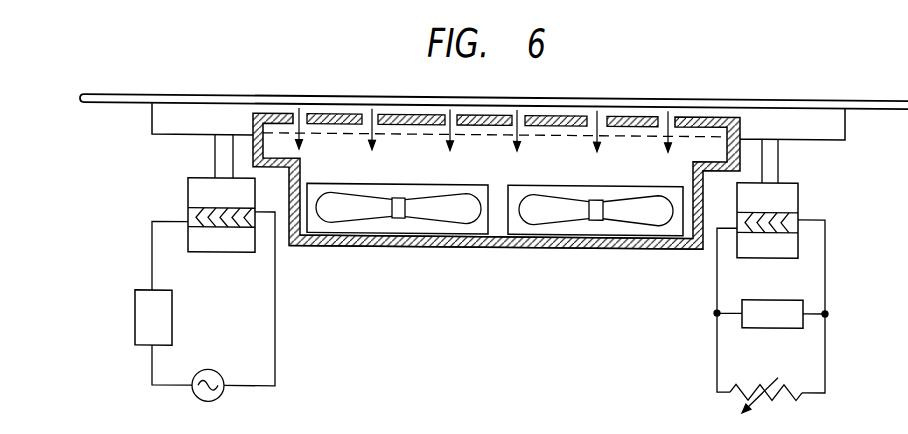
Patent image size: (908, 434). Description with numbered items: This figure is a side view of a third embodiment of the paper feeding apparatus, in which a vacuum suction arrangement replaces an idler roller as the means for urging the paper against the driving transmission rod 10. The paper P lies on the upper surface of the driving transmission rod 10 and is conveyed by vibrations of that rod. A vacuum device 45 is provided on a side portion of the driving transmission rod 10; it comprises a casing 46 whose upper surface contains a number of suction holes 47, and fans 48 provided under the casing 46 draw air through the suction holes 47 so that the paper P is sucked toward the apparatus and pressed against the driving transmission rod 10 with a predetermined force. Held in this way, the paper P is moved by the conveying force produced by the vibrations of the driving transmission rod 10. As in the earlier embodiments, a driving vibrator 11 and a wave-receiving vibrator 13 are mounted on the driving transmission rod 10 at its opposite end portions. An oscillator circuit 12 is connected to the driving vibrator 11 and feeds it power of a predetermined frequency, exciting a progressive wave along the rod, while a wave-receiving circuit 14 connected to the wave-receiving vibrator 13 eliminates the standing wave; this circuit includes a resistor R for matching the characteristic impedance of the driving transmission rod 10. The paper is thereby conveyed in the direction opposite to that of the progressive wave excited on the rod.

The paper P is at (800, 95).
The driving transmission rod 10 is at (803, 125).
The driving vibrator 11 is at (240, 238).
The oscillator circuit 12 is at (124, 326).
The wave-receiving vibrator 13 is at (783, 196).
The wave-receiving circuit 14 is at (801, 324).
The vacuum device 45 is at (415, 252).
The casing 46 is at (362, 242).
The suction holes 47 is at (455, 108).
The fans 48 is at (463, 209).
The resistor R is at (766, 402).